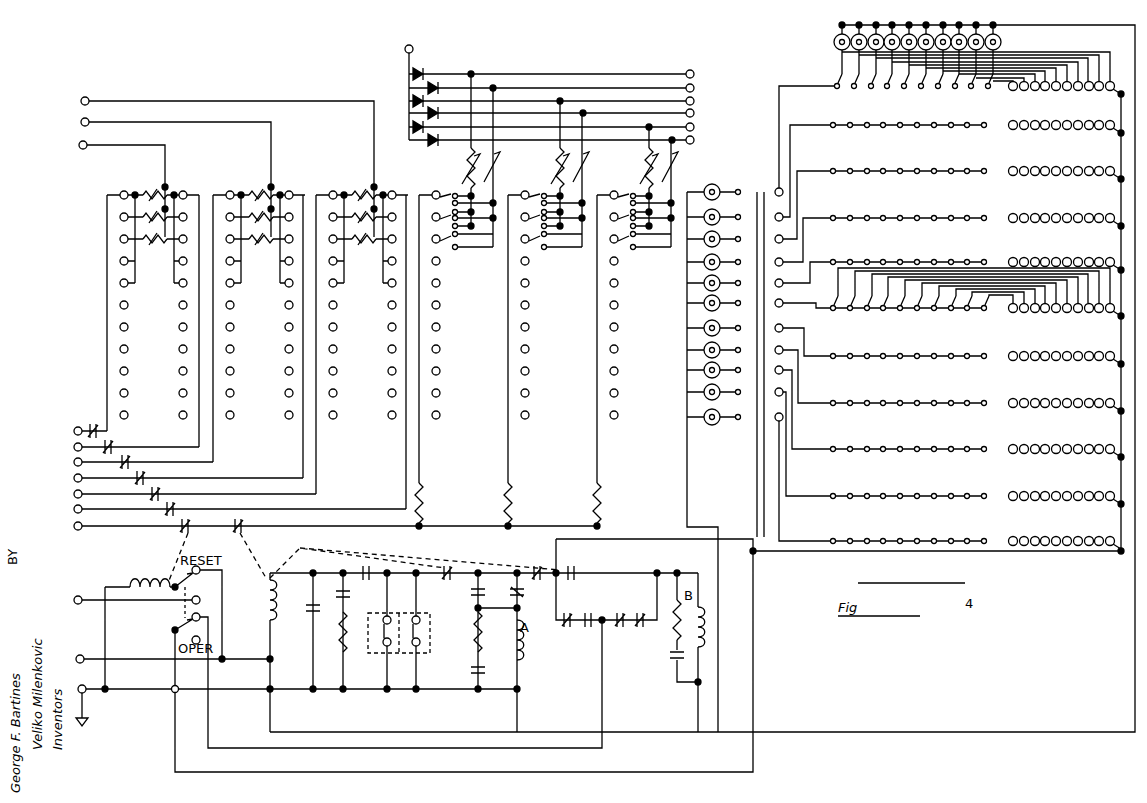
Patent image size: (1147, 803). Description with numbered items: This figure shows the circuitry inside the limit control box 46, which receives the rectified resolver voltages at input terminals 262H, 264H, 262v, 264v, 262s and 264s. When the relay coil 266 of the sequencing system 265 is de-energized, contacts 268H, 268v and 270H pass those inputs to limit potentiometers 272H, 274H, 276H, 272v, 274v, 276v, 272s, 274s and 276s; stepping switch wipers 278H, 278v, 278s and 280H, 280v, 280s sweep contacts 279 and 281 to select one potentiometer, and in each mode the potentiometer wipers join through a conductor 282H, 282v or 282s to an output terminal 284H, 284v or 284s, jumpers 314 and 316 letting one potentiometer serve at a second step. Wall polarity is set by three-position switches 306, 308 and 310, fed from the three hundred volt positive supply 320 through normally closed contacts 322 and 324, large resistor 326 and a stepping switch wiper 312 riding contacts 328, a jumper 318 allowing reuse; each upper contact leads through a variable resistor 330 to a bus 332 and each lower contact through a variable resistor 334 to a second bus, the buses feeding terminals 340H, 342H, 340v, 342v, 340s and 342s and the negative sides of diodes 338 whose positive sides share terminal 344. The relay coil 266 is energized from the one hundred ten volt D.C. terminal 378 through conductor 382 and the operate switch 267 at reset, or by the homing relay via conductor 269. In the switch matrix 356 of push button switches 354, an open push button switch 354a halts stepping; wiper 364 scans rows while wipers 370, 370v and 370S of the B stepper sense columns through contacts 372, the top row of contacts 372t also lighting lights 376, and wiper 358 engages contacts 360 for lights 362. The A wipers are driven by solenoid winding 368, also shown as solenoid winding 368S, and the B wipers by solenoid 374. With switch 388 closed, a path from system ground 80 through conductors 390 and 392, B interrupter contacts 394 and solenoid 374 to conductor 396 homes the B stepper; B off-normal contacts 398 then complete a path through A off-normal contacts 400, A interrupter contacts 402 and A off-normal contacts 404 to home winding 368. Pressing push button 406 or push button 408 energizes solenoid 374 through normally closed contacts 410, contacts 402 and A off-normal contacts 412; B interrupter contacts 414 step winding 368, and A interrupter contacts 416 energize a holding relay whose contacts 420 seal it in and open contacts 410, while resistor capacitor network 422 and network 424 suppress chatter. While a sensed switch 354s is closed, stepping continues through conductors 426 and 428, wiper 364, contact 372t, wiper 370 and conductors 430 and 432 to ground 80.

The limit control box 46 is at (355, 83).
The system ground 80 is at (86, 722).
The sequencing system 265 is at (425, 715).
The relay coil 266 is at (146, 582).
The operate switch 267 is at (178, 596).
The conductor 269 is at (76, 598).
The limit potentiometer 272H is at (146, 188).
The limit potentiometer 272v is at (256, 189).
The limit potentiometer 272s is at (360, 189).
The limit potentiometer 274H is at (144, 211).
The limit potentiometer 274v is at (252, 220).
The limit potentiometer 274s is at (355, 220).
The limit potentiometer 276H is at (145, 234).
The limit potentiometer 276v is at (250, 241).
The limit potentiometer 276s is at (355, 241).
The stepping switch wiper 278H is at (120, 195).
The stepping switch wiper 278v is at (229, 193).
The stepping switch wiper 278s is at (333, 193).
The contacts 279 is at (160, 371).
The stepping switch wiper 280H is at (185, 193).
The stepping switch wiper 280v is at (290, 193).
The stepping switch wiper 280s is at (392, 193).
The contacts 281 is at (183, 393).
The conductor 282H is at (146, 145).
The conductor 282v is at (138, 122).
The conductor 282s is at (124, 101).
The output terminal 284H is at (79, 145).
The output terminal 284v is at (81, 121).
The output terminal 284s is at (81, 99).
The input terminal 262H is at (75, 430).
The input terminal 262v is at (75, 462).
The input terminal 262s is at (75, 509).
The input terminal 264H is at (75, 446).
The input terminal 264v is at (75, 494).
The input terminal 264s is at (75, 526).
The contacts 268H is at (93, 427).
The contacts 268v is at (75, 478).
The contacts 270H is at (105, 447).
The three-position switch 306 is at (455, 193).
The three-position switch 308 is at (640, 240).
The three-position switch 310 is at (458, 240).
The stepping switch wiper 312 is at (440, 198).
The jumper 314 is at (135, 262).
The jumper 316 is at (174, 284).
The jumper 318 is at (440, 283).
The 300 volt positive supply 320 is at (80, 529).
The normally closed contacts 322 is at (182, 528).
The normally closed contacts 324 is at (240, 531).
The large resistor 326 is at (424, 500).
The contacts 328 is at (440, 393).
The variable resistor 330 is at (466, 168).
The bus 332 is at (545, 126).
The variable resistor 334 is at (666, 138).
The diode 338 is at (440, 88).
The terminal 340v is at (694, 73).
The terminal 342v is at (694, 87).
The terminal 340s is at (694, 100).
The terminal 342s is at (694, 112).
The terminal 340H is at (694, 127).
The terminal 342H is at (694, 140).
The terminal 344 is at (413, 52).
The push button switch 354 is at (950, 88).
The push button switch 354a is at (855, 88).
The sensed switch 354s is at (835, 84).
The switch matrix 356 is at (892, 333).
The wiper 358 is at (760, 190).
The contacts 360 is at (740, 418).
The lights 362 is at (704, 192).
The wiper 364 is at (779, 188).
The solenoid winding 368 is at (520, 665).
The solenoid winding 368S is at (160, 493).
The wiper 370 is at (1121, 94).
The wiper 370v is at (145, 476).
The wiper 370S is at (176, 509).
The contacts 372 is at (1030, 130).
The top row of contacts 372t is at (1045, 91).
The solenoid 374 is at (705, 607).
The lights 376 is at (834, 42).
The 110 volt D.C. terminal 378 is at (80, 655).
The conductor 382 is at (266, 612).
The switch 388 is at (175, 631).
The conductor 390 is at (156, 692).
The conductor 392 is at (262, 748).
The B interrupter contacts 394 is at (650, 628).
The conductor 396 is at (455, 731).
The B off-normal contacts 398 is at (589, 628).
The A off-normal contacts 400 is at (521, 640).
The A interrupter contacts 402 is at (538, 566).
The A off-normal contacts 404 is at (520, 594).
The push button 406 is at (415, 648).
The push button 408 is at (385, 648).
The normally closed contacts 410 is at (447, 566).
The A off-normal contacts 412 is at (574, 570).
The B interrupter contacts 414 is at (505, 573).
The A interrupter contacts 416 is at (313, 614).
The contacts 420 is at (367, 570).
The resistor capacitor network 422 is at (475, 668).
The network 424 is at (343, 598).
The conductor 426 is at (635, 539).
The conductor 428 is at (755, 470).
The conductor 430 is at (786, 552).
The conductor 432 is at (756, 660).